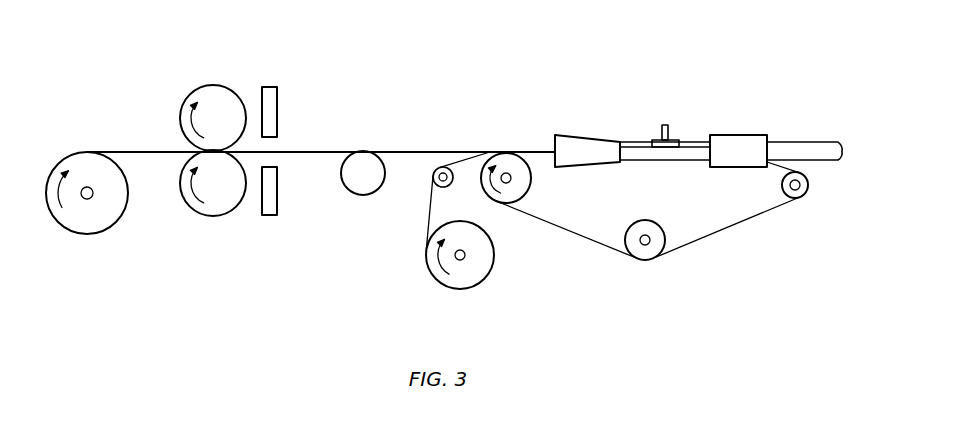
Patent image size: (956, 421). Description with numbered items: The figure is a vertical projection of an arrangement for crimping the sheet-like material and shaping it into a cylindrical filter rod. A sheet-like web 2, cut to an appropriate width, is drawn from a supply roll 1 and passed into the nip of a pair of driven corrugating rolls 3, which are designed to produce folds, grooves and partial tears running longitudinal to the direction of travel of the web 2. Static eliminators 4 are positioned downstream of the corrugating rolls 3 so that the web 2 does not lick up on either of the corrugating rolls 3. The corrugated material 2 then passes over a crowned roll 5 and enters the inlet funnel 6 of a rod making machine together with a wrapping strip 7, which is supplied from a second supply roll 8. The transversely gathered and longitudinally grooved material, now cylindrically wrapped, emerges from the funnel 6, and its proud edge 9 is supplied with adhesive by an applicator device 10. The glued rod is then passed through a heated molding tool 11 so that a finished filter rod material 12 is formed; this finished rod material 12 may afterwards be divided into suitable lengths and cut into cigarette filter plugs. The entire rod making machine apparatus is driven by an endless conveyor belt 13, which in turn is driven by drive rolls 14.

The supply roll 1 is at (110, 207).
The sheet-like web 2 is at (130, 150).
The corrugating rolls 3 is at (208, 97).
The static eliminators 4 is at (270, 97).
The crowned roll 5 is at (355, 183).
The inlet funnel 6 is at (573, 143).
The wrapping strip 7 is at (430, 198).
The supply roll 8 is at (482, 263).
The proud edge 9 is at (635, 142).
The applicator device 10 is at (673, 138).
The heated molding tool 11 is at (728, 145).
The finished filter rod material 12 is at (795, 150).
The endless conveyor belt 13 is at (575, 235).
The drive rolls 14 is at (520, 170).